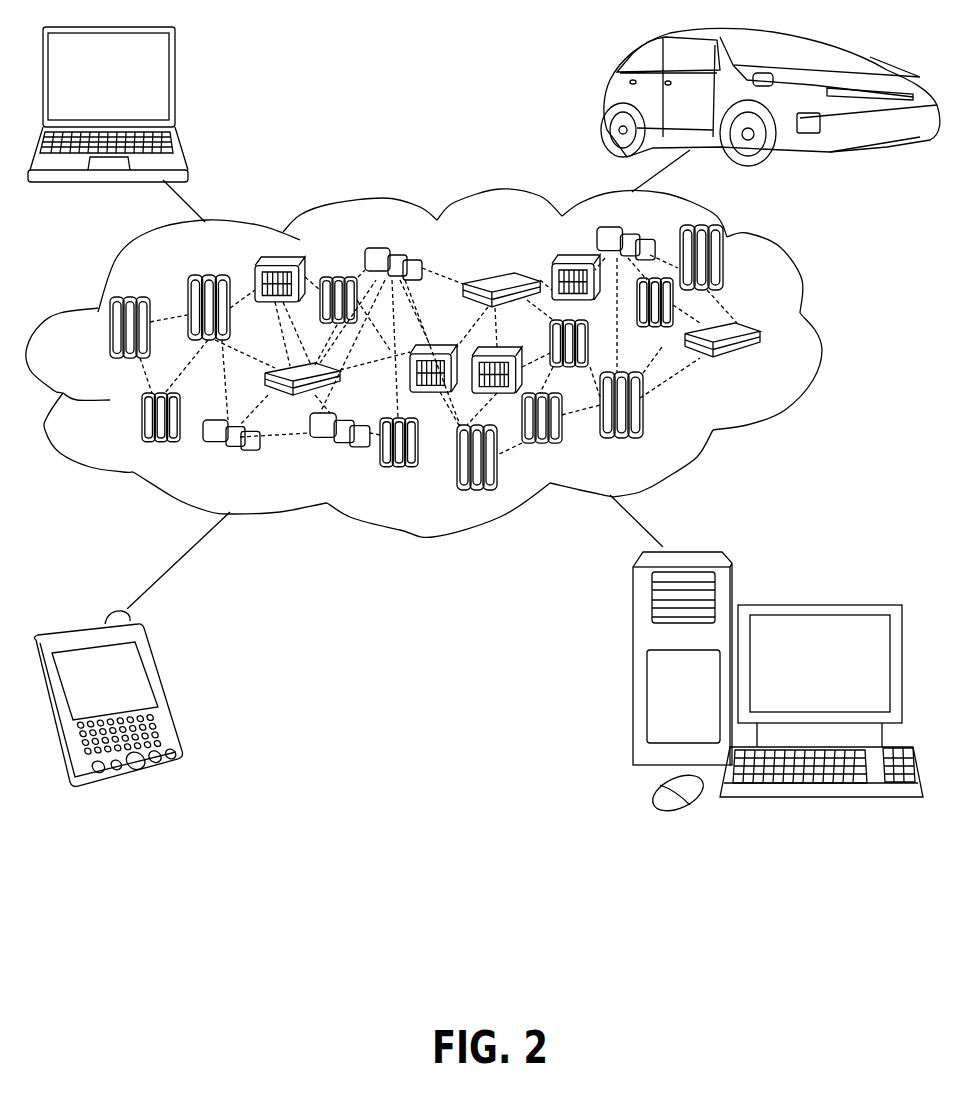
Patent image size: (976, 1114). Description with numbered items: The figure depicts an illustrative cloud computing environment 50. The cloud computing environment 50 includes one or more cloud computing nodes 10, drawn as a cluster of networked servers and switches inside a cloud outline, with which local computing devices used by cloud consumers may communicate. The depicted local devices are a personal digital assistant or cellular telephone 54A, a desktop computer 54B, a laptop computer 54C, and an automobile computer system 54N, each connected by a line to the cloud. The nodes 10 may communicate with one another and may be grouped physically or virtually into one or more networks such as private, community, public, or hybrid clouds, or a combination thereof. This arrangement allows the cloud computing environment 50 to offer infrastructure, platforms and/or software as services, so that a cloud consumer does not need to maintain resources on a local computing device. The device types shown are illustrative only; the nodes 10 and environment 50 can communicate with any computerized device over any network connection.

The cloud computing node 10 is at (762, 365).
The cloud computing environment 50 is at (820, 337).
The personal digital assistant or cellular telephone 54A is at (168, 692).
The desktop computer 54B is at (818, 605).
The laptop computer 54C is at (175, 93).
The automobile computer system 54N is at (602, 99).